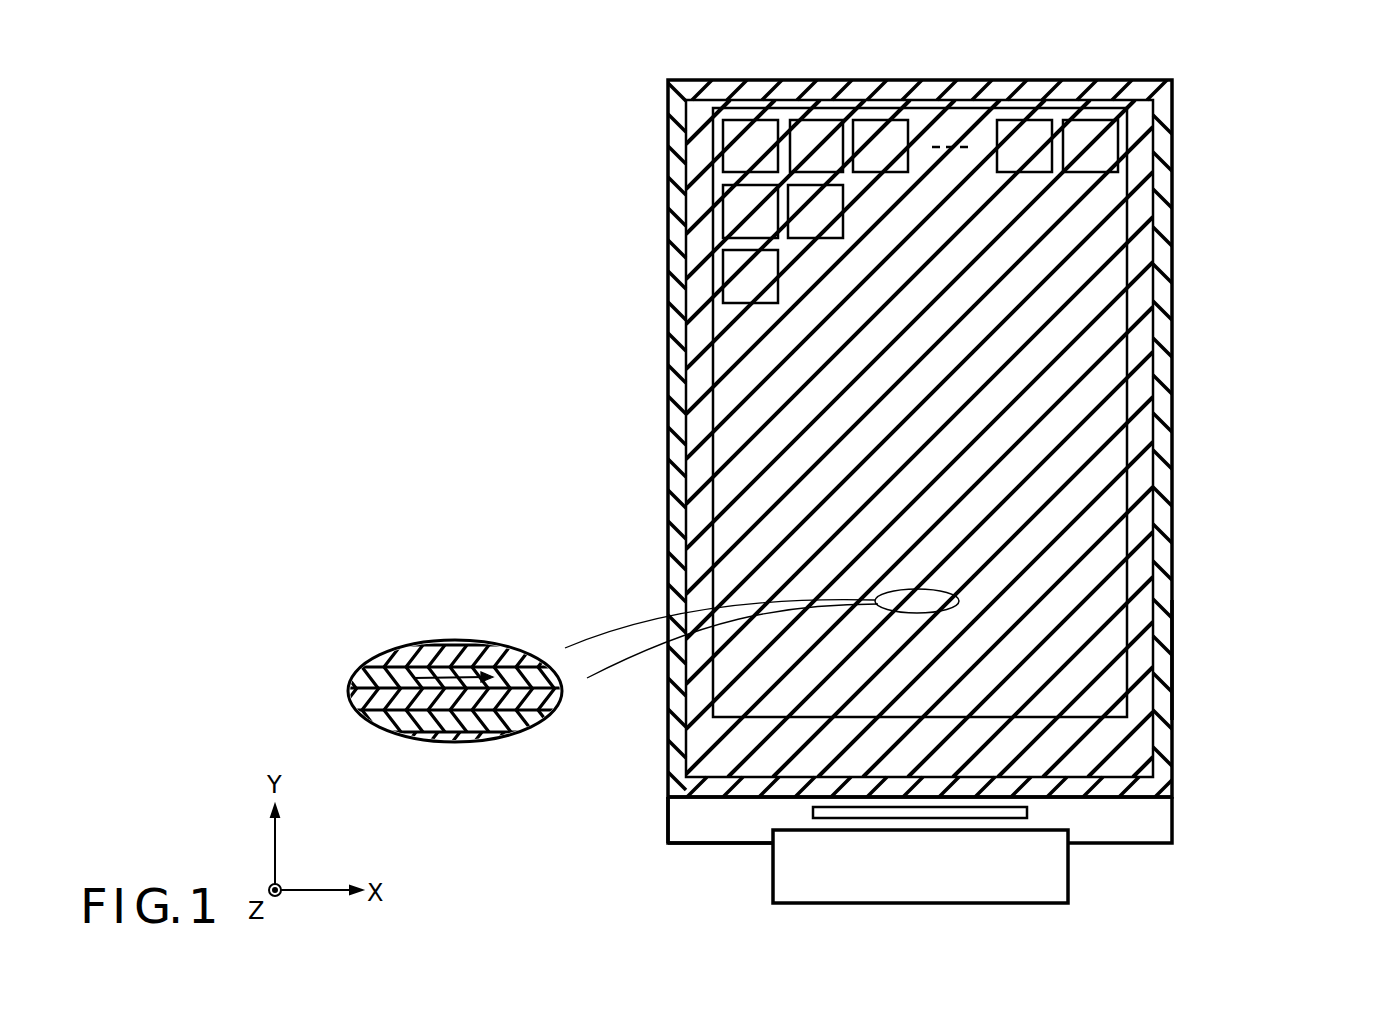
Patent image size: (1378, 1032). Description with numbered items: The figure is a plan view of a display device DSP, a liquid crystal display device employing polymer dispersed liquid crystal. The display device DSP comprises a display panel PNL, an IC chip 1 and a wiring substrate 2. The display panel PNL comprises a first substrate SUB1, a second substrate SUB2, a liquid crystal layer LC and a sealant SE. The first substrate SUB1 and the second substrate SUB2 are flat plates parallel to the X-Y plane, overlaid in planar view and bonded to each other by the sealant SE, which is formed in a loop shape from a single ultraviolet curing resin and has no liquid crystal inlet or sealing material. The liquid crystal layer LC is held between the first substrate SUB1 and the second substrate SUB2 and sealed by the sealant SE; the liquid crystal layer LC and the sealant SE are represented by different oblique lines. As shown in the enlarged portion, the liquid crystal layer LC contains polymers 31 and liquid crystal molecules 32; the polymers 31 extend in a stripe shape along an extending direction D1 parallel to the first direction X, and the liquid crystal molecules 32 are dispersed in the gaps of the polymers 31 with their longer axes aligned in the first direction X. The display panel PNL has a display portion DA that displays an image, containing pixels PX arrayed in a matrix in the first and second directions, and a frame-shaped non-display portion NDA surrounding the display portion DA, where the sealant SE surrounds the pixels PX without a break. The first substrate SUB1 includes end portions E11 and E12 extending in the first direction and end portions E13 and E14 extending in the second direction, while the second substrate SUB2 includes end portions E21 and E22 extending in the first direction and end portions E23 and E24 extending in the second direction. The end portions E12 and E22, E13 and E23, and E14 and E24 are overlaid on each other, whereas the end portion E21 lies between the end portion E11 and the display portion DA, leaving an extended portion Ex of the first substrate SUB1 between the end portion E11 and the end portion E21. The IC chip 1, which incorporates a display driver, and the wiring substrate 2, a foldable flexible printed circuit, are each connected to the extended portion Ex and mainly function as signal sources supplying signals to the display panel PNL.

The display device DSP is at (1262, 126).
The display panel PNL is at (1176, 74).
The first substrate SUB1 is at (1165, 820).
The second substrate SUB2 is at (1162, 773).
The liquid crystal layer LC is at (1145, 742).
The sealant SE is at (1172, 657).
The display portion DA is at (1140, 513).
The non-display portion NDA is at (917, 408).
The pixels PX is at (868, 122).
The end portion E11 is at (690, 843).
The end portion E12 is at (947, 60).
The end portion E13 is at (613, 436).
The end portion E14 is at (1224, 440).
The end portion E21 is at (748, 798).
The end portion E22 is at (945, 80).
The end portion E23 is at (668, 393).
The end portion E24 is at (1173, 430).
The extended portion Ex is at (680, 818).
The IC chip 1 is at (1027, 811).
The wiring substrate 2 is at (1068, 888).
The polymers 31 is at (357, 705).
The liquid crystal molecules 32 is at (447, 713).
The extending direction D1 is at (443, 678).